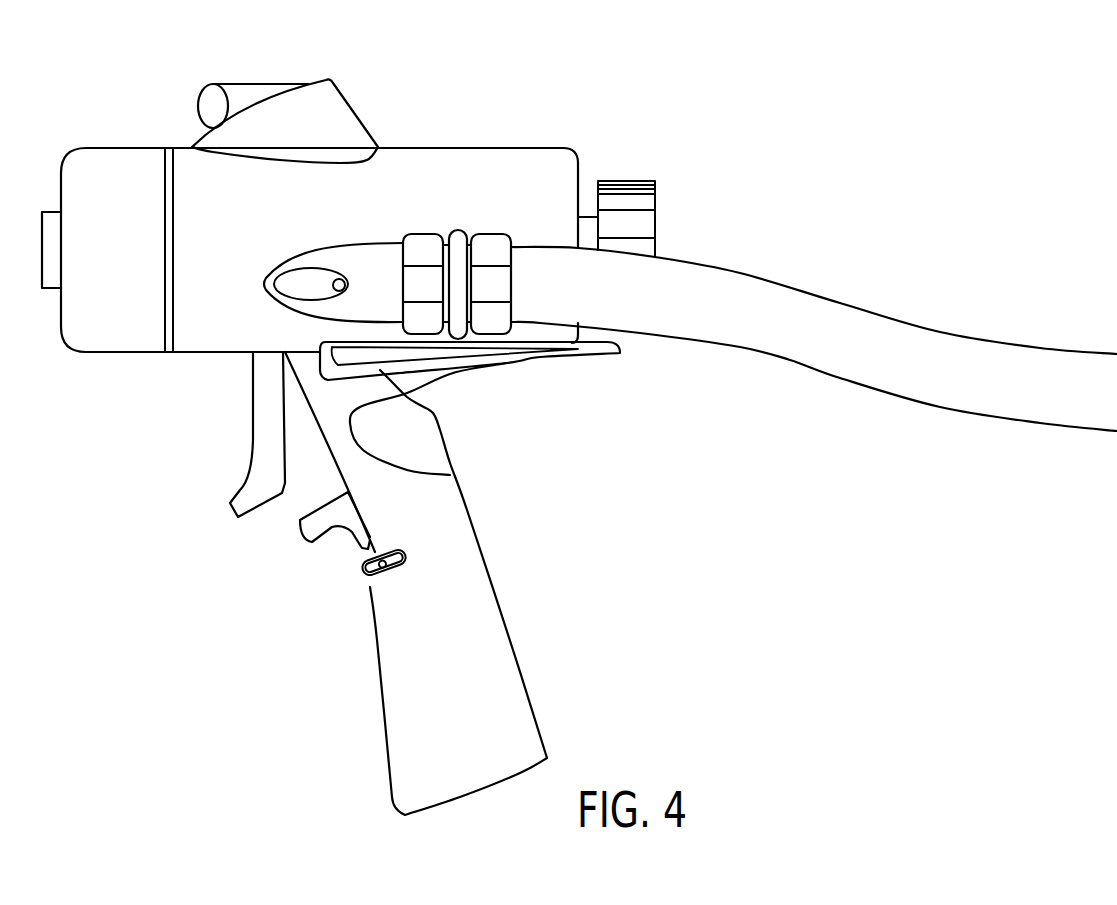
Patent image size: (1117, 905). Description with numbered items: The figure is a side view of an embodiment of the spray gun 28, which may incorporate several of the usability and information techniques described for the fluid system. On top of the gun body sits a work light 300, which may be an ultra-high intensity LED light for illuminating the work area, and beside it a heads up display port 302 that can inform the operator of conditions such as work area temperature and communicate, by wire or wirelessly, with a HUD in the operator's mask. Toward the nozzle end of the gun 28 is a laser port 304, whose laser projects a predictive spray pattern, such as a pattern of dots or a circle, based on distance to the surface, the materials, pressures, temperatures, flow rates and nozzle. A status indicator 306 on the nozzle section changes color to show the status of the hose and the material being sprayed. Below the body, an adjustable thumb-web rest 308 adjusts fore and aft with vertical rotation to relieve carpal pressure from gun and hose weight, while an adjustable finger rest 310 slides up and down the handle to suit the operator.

The gun 28 is at (237, 246).
The work light 300 is at (253, 90).
The heads up display port 302 is at (337, 100).
The laser port 304 is at (320, 280).
The status indicator 306 is at (458, 232).
The adjustable thumb-web rest 308 is at (433, 412).
The adjustable finger rest 310 is at (387, 575).